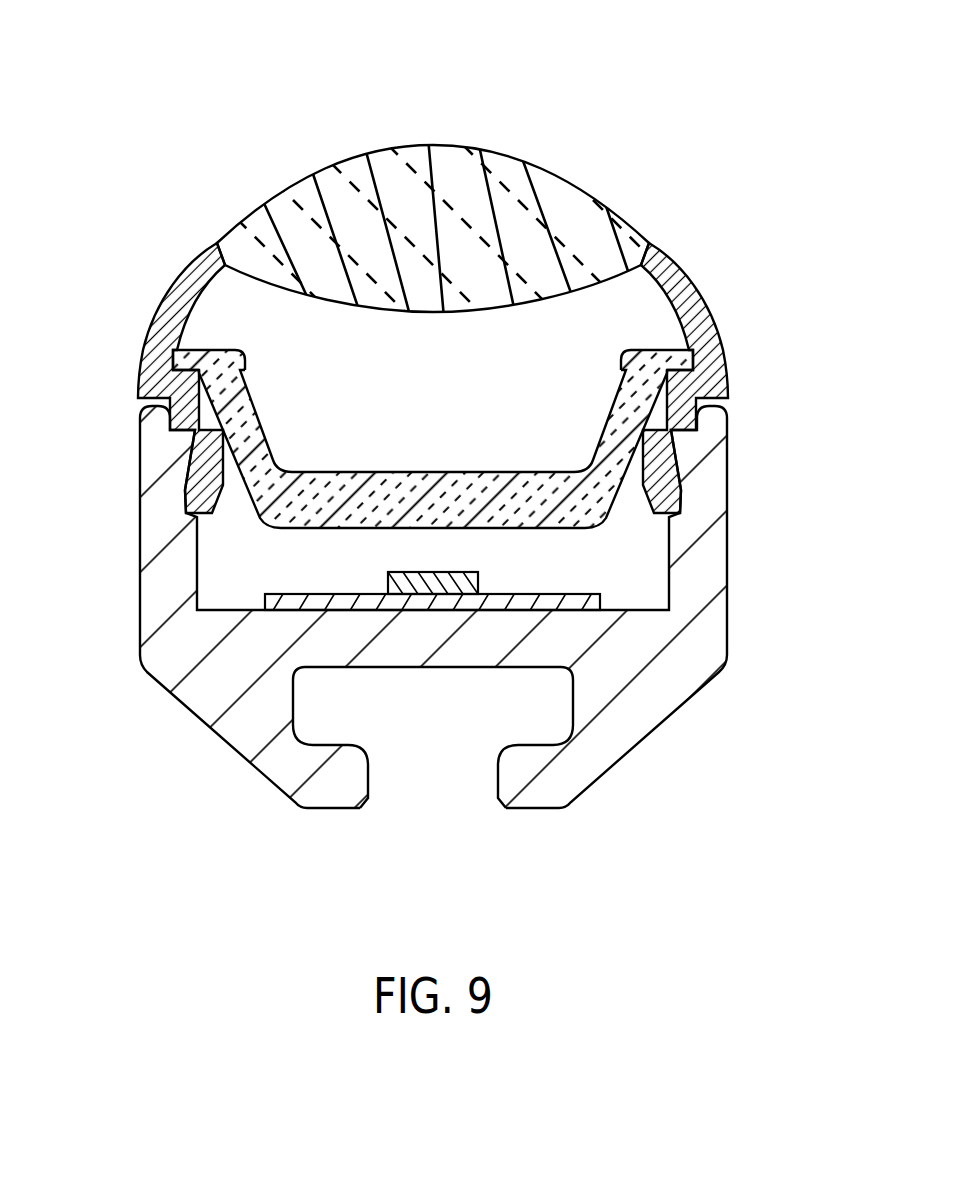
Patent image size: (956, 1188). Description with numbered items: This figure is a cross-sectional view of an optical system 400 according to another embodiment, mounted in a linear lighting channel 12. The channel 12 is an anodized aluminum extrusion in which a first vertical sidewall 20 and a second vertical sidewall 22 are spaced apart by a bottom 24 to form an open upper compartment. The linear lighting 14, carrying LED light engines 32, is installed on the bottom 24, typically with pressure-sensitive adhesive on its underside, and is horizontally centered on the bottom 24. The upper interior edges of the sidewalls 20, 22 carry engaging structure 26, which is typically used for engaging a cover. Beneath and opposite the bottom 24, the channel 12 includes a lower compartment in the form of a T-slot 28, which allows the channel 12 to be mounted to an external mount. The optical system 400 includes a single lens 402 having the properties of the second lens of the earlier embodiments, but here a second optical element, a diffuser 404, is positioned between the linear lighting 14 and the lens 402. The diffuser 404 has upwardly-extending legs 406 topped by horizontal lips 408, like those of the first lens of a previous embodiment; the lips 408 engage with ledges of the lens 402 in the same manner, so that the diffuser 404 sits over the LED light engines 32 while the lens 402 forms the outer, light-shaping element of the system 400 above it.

The channel 12 is at (435, 643).
The linear lighting 14 is at (284, 588).
The first vertical sidewall 20 is at (150, 518).
The second vertical sidewall 22 is at (712, 493).
The bottom 24 is at (641, 608).
The engaging structure 26 is at (165, 410).
The T-slot 28 is at (442, 762).
The LED light engines 32 is at (478, 578).
The optical system 400 is at (433, 289).
The lens 402 is at (490, 147).
The diffuser 404 is at (432, 465).
The upwardly-extending legs 406 is at (257, 428).
The horizontal lips 408 is at (205, 348).